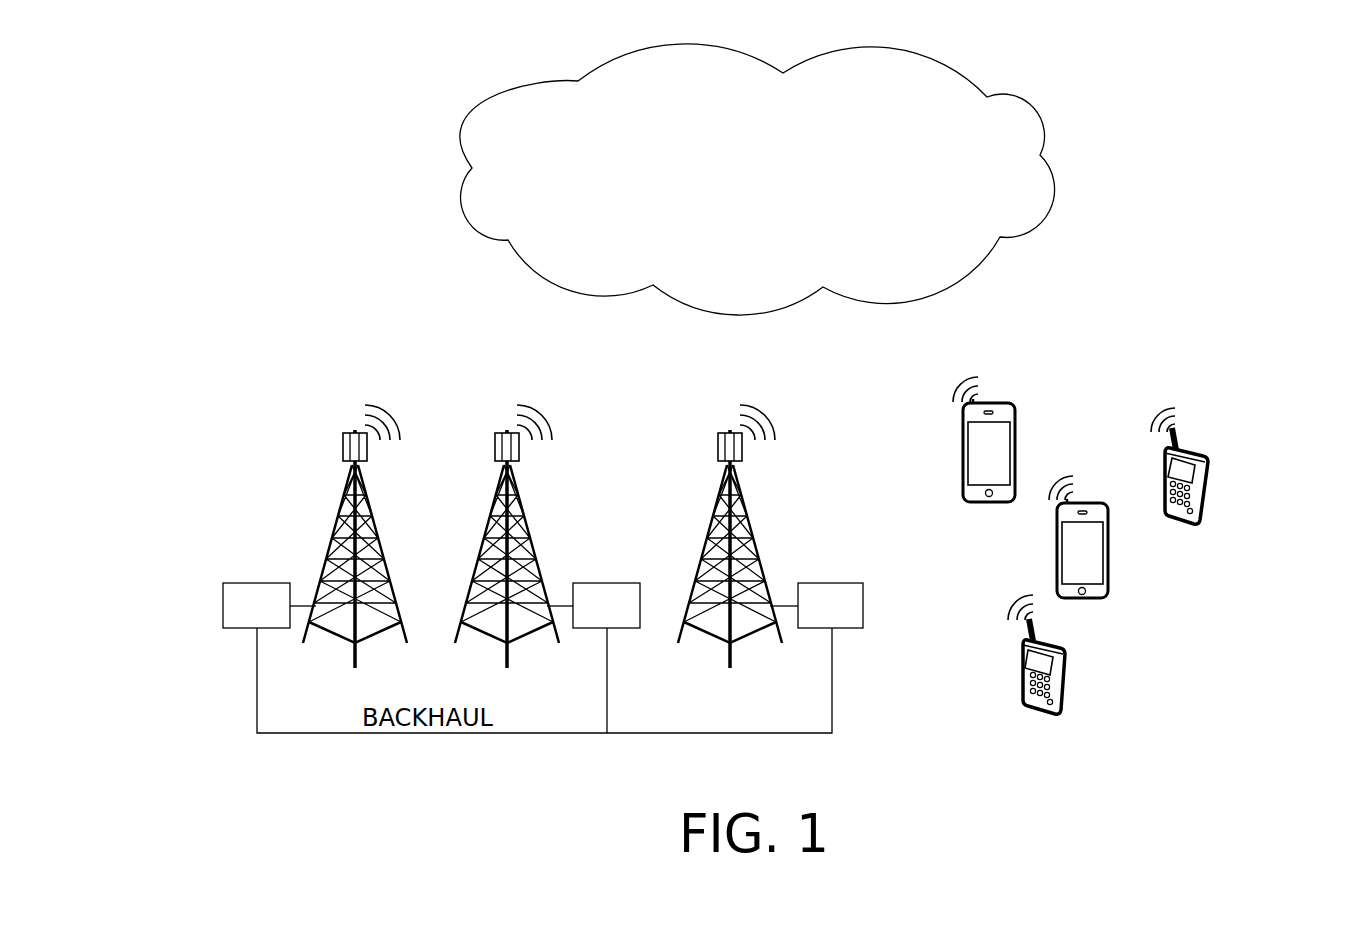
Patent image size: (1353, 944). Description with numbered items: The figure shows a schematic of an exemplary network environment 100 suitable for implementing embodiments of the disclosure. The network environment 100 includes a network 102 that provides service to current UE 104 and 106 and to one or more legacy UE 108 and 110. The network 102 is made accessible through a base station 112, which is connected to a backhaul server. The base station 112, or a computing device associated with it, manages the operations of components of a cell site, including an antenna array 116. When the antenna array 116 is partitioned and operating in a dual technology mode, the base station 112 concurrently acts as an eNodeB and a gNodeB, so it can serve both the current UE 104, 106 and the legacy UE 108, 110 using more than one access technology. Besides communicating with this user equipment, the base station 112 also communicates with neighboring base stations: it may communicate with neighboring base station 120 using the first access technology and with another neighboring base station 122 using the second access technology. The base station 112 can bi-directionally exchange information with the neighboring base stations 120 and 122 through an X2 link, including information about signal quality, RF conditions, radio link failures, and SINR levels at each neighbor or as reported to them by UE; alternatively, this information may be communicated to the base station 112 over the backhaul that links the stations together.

The network environment 100 is at (246, 139).
The network 102 is at (778, 190).
The current UE 104 is at (1015, 447).
The current UE 106 is at (1108, 548).
The legacy UE 108 is at (1066, 668).
The legacy UE 110 is at (1208, 487).
The base station 112 is at (830, 583).
The antenna array 116 is at (742, 443).
The neighboring base station 120 is at (604, 583).
The neighboring base station 122 is at (257, 583).